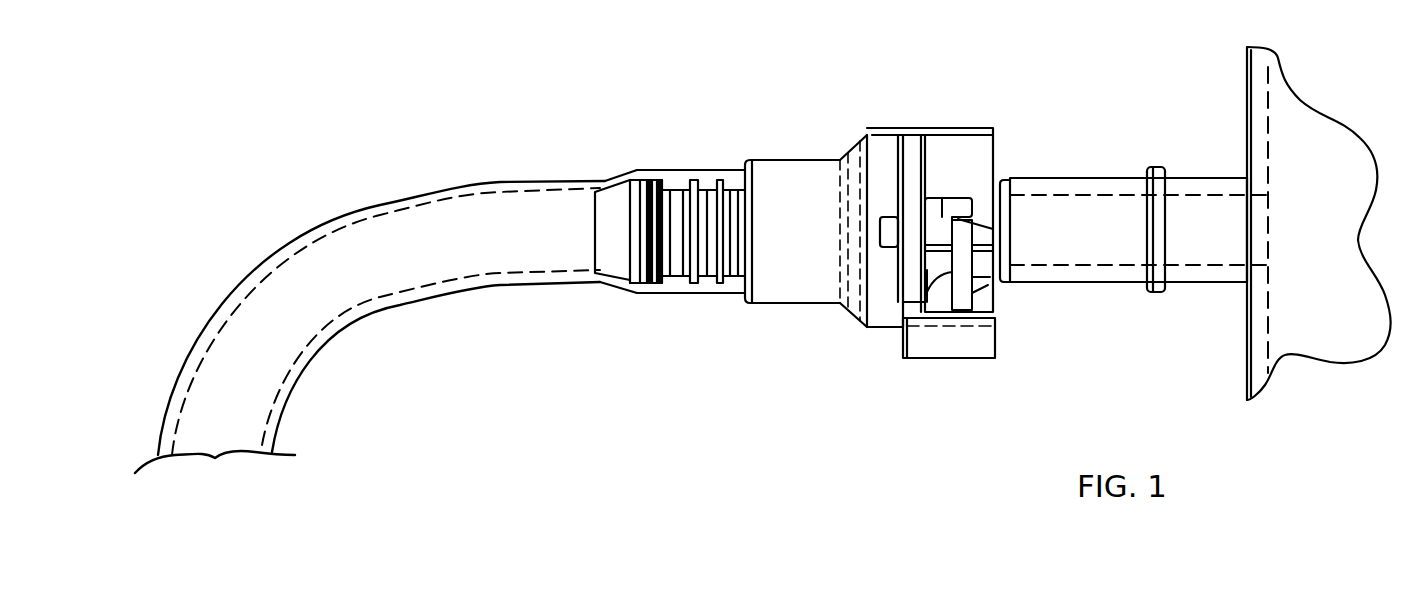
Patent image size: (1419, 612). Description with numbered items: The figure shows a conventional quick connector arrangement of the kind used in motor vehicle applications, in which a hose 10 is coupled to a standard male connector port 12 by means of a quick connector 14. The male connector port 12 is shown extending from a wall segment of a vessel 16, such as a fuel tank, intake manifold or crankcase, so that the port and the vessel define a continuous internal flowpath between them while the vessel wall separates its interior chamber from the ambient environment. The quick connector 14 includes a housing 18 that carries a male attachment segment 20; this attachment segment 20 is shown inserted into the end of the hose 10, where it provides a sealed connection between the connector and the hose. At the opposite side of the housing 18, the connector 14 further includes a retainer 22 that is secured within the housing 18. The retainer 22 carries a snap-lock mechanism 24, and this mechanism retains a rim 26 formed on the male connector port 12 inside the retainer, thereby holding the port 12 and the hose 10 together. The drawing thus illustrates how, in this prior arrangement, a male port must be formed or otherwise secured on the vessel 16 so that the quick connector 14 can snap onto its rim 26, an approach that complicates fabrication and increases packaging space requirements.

The hose 10 is at (302, 330).
The male connector port 12 is at (1100, 183).
The quick connector 14 is at (953, 352).
The vessel 16 is at (1315, 118).
The housing 18 is at (797, 170).
The male attachment segment 20 is at (612, 265).
The retainer 22 is at (943, 147).
The snap-lock mechanism 24 is at (967, 287).
The rim 26 is at (1157, 293).